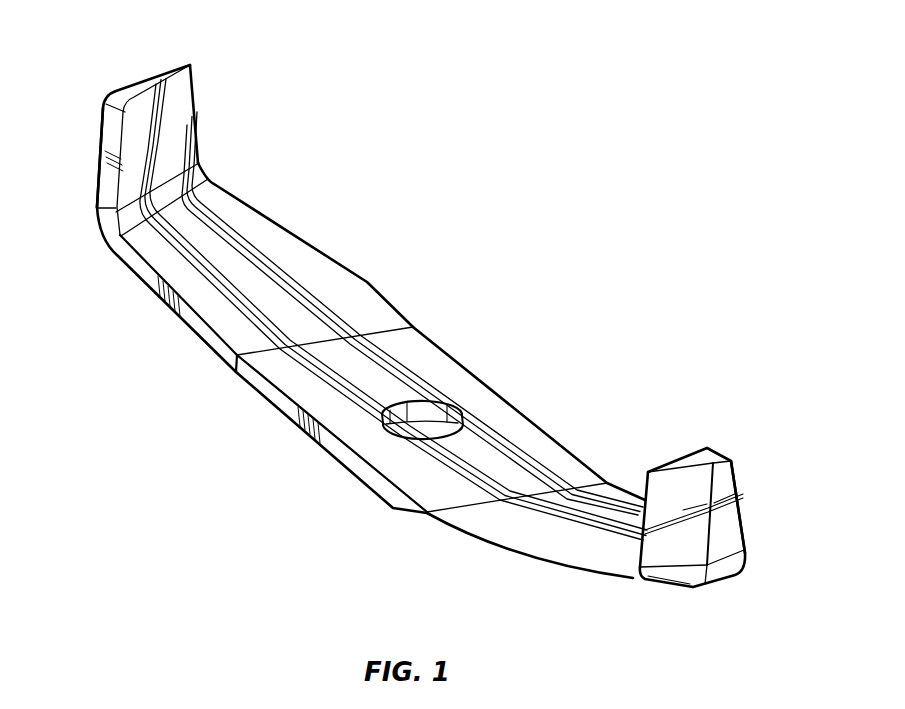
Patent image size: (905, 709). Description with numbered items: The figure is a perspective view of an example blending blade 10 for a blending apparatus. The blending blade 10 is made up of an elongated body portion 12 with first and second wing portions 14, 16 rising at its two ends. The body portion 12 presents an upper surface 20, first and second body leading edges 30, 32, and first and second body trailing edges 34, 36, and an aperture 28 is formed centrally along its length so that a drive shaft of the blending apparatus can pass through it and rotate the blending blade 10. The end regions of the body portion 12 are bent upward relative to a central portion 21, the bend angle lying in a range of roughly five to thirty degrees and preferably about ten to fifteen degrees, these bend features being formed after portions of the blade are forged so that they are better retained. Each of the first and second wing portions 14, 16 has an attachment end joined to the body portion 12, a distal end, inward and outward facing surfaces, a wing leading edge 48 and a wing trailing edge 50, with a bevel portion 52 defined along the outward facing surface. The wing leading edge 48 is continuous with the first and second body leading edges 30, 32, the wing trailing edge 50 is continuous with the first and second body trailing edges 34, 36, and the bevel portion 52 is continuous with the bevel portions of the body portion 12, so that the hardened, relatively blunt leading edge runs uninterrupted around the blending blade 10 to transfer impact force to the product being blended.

The blending blade 10 is at (487, 242).
The body portion 12 is at (171, 340).
The first wing portion 14 is at (211, 101).
The second wing portion 16 is at (726, 442).
The upper surface 20 is at (320, 266).
The central portion 21 is at (392, 463).
The aperture 28 is at (432, 406).
The first body leading edge 30 is at (273, 217).
The second body leading edge 32 is at (537, 557).
The first body trailing edge 34 is at (157, 282).
The second body trailing edge 36 is at (546, 431).
The wing leading edge 48 is at (197, 118).
The wing trailing edge 50 is at (115, 143).
The bevel portion 52 is at (675, 547).